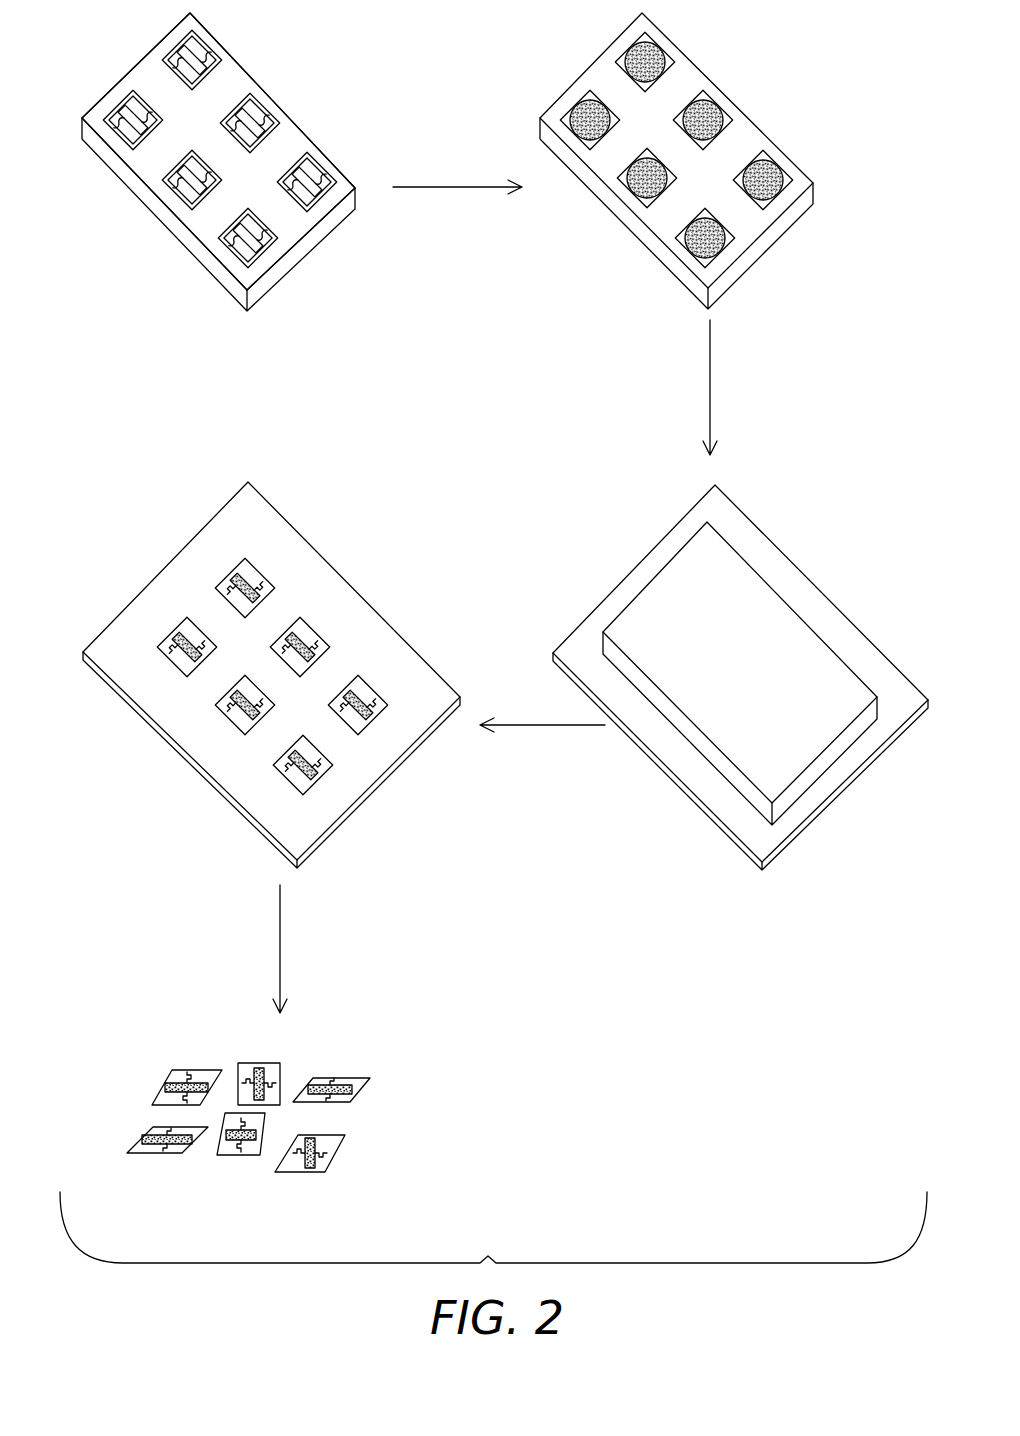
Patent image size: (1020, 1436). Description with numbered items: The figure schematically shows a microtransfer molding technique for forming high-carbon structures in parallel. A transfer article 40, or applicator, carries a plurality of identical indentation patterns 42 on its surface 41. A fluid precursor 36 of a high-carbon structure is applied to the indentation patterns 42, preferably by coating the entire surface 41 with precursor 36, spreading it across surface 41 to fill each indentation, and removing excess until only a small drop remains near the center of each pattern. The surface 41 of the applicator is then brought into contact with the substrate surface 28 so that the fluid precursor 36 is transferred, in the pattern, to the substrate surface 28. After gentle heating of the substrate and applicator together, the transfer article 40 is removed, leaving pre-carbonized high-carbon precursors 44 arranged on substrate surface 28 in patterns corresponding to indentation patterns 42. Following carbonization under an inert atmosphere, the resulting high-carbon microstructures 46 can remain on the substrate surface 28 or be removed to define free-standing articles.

The substrate surface 28 is at (270, 533).
The fluid precursor 36 is at (665, 53).
The transfer article 40 is at (299, 88).
The surface 41 is at (293, 228).
The indentation patterns 42 is at (125, 110).
The pre-carbonized high-carbon precursors 44 is at (233, 593).
The high-carbon microstructures 46 is at (275, 1072).